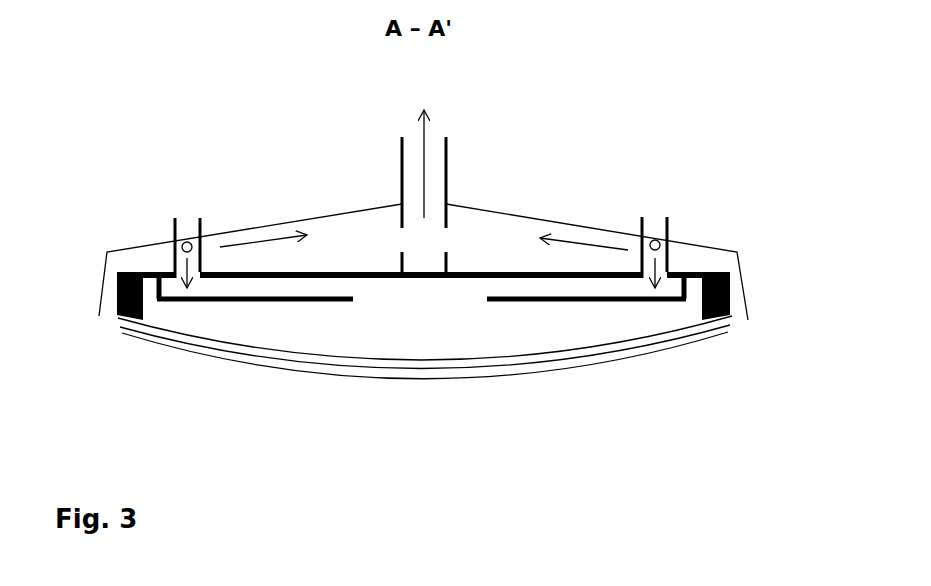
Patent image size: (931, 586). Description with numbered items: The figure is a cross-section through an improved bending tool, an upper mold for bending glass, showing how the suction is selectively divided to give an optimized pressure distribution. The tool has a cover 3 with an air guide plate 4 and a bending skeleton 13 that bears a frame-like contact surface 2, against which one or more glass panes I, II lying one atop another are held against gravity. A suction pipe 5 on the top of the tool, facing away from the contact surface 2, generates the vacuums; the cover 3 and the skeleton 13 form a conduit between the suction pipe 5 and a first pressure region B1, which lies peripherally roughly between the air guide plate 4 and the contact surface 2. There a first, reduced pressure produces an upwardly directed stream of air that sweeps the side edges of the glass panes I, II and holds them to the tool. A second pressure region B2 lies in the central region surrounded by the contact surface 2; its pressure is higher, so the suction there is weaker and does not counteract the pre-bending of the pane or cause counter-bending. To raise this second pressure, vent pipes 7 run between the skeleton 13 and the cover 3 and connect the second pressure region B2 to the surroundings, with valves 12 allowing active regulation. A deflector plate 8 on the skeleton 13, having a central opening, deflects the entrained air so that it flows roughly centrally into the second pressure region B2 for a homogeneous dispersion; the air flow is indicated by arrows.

The contact surface 2 is at (118, 317).
The cover 3 is at (225, 225).
The air guide plate 4 is at (100, 280).
The suction pipe 5 is at (400, 168).
The vent pipes 7 is at (175, 228).
The deflector plate 8 is at (298, 305).
The valves 12 is at (187, 241).
The bending skeleton 13 is at (482, 272).
The glass pane I is at (188, 355).
The glass pane II is at (220, 355).
The first pressure region B1 is at (101, 326).
The second pressure region B2 is at (457, 329).